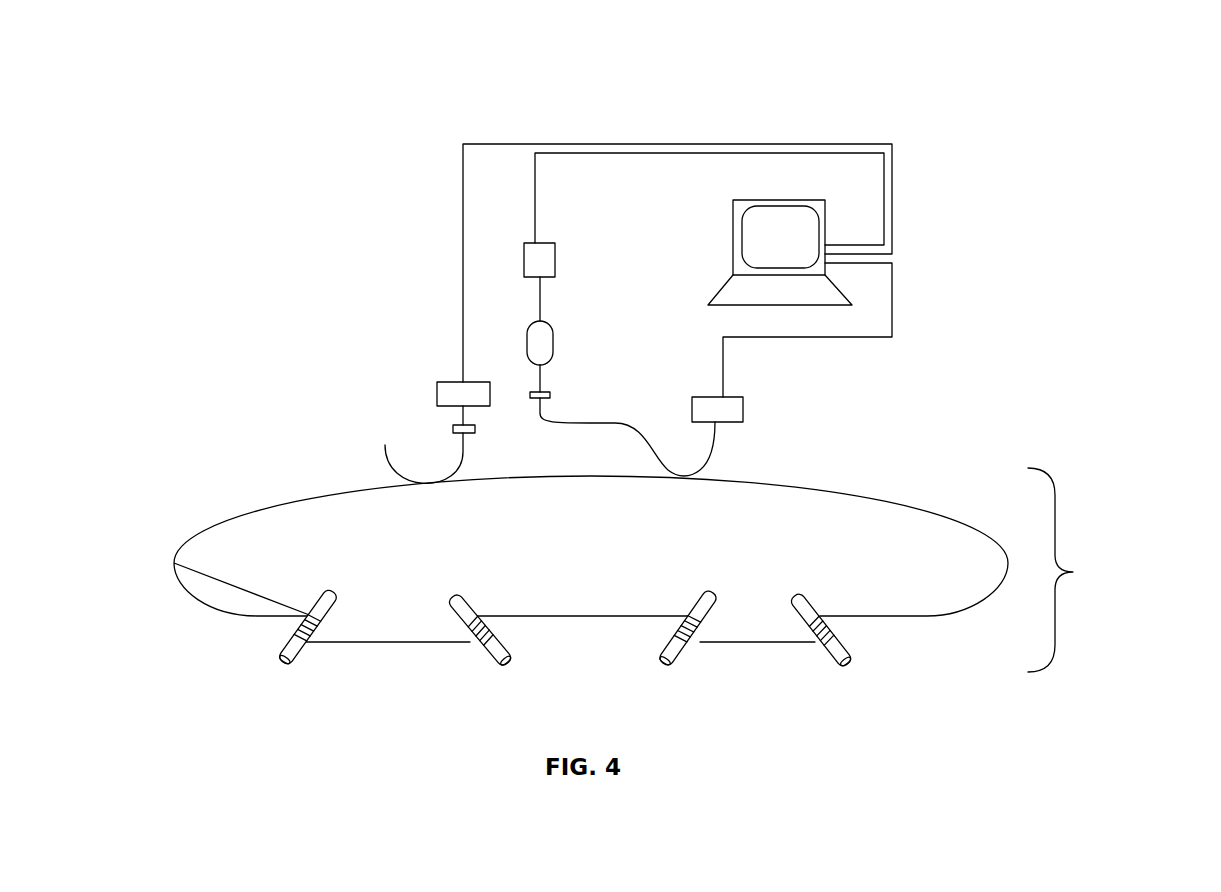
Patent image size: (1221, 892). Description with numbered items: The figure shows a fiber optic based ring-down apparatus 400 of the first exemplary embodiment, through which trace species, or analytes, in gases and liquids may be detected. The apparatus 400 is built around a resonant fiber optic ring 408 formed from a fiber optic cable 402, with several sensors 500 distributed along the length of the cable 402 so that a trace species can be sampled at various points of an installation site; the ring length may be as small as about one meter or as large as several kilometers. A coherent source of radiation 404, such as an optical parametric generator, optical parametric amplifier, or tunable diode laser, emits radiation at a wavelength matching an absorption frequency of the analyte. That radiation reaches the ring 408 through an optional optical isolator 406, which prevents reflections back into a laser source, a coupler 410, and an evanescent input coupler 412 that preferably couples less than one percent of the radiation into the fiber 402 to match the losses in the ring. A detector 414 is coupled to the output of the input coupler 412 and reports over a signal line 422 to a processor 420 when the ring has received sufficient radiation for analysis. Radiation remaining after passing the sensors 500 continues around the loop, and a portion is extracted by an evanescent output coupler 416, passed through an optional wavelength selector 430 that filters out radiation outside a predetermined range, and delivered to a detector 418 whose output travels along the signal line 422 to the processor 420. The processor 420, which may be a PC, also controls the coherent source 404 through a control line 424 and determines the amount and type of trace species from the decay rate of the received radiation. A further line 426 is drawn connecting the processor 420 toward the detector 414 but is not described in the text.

The fiber optic based ring-down apparatus 400 is at (558, 67).
The fiber optic cable 402 is at (958, 518).
The coherent source of radiation 404 is at (548, 258).
The optical isolator 406 is at (545, 343).
The resonant fiber optic ring 408 is at (1073, 572).
The coupler 410 is at (550, 395).
The evanescent input coupler 412 is at (700, 473).
The detector 414 is at (735, 408).
The evanescent output coupler 416 is at (395, 480).
The detector 418 is at (440, 390).
The processor 420 is at (752, 229).
The signal line 422 is at (463, 263).
The control line 424 is at (537, 193).
The signal line 426 is at (850, 338).
The wavelength selector 430 is at (453, 429).
The sensors 500 is at (286, 668).